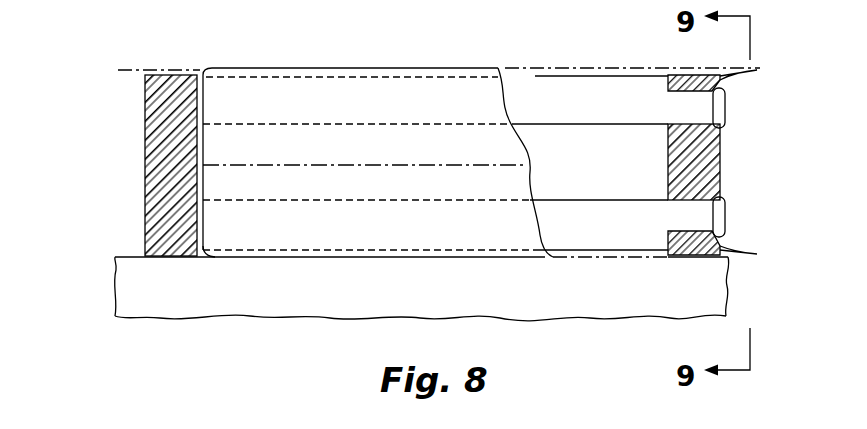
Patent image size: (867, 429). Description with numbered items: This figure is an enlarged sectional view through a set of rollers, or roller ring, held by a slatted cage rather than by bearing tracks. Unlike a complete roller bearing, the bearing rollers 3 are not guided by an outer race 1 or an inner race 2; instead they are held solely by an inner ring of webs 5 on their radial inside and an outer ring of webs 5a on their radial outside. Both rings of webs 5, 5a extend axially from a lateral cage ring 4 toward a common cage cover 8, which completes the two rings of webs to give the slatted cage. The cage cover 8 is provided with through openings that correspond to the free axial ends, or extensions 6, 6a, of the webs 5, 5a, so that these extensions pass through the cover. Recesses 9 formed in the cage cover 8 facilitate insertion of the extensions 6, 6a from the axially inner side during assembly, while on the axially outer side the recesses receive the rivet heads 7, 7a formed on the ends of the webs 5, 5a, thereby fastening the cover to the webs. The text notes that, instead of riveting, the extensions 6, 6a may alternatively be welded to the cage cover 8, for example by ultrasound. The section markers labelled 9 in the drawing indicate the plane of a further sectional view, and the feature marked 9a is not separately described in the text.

The outer race 1 is at (128, 68).
The inner race 2 is at (128, 282).
The bearing rollers 3 is at (285, 235).
The lateral cage ring 4 is at (160, 135).
The inner ring of webs 5 is at (612, 240).
The outer ring of webs 5a is at (585, 85).
The extension of inner web 6 is at (698, 222).
The extension of outer web 6a is at (698, 102).
The rivet head of inner web 7 is at (720, 207).
The rivet head of outer web 7a is at (720, 115).
The cage cover 8 is at (707, 158).
The recesses 9 is at (720, 250).
The upper seal ring 9a is at (720, 76).